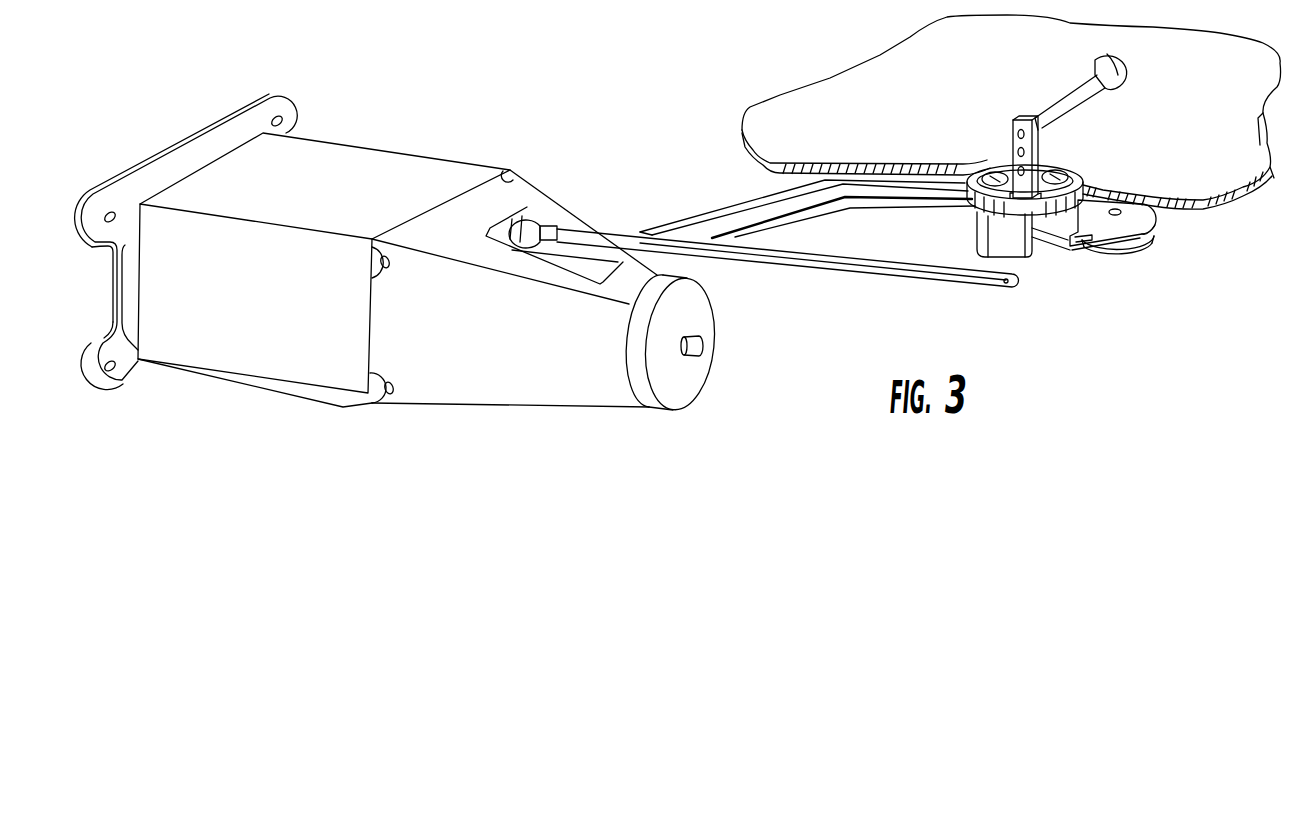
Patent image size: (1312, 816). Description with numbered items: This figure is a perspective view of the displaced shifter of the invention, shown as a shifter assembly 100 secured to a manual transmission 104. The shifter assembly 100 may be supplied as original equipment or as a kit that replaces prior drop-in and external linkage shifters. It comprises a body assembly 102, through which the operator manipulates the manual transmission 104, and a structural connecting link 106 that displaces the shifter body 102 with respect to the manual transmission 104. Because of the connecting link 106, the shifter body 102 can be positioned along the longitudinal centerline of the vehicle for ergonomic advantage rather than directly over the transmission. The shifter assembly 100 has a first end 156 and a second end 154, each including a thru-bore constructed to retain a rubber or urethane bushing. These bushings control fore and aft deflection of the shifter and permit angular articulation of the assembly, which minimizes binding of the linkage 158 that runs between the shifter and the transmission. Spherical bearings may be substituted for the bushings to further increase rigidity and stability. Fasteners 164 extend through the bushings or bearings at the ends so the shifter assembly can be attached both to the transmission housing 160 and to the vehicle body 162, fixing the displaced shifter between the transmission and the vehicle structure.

The shifter assembly 100 is at (987, 163).
The body assembly 102 is at (1030, 232).
The manual transmission 104 is at (230, 363).
The structural connecting link 106 is at (762, 213).
The second end 154 is at (658, 235).
The first end 156 is at (1147, 227).
The linkage 158 is at (890, 270).
The transmission housing 160 is at (520, 387).
The vehicle body 162 is at (1127, 187).
The fasteners 164 is at (1133, 257).